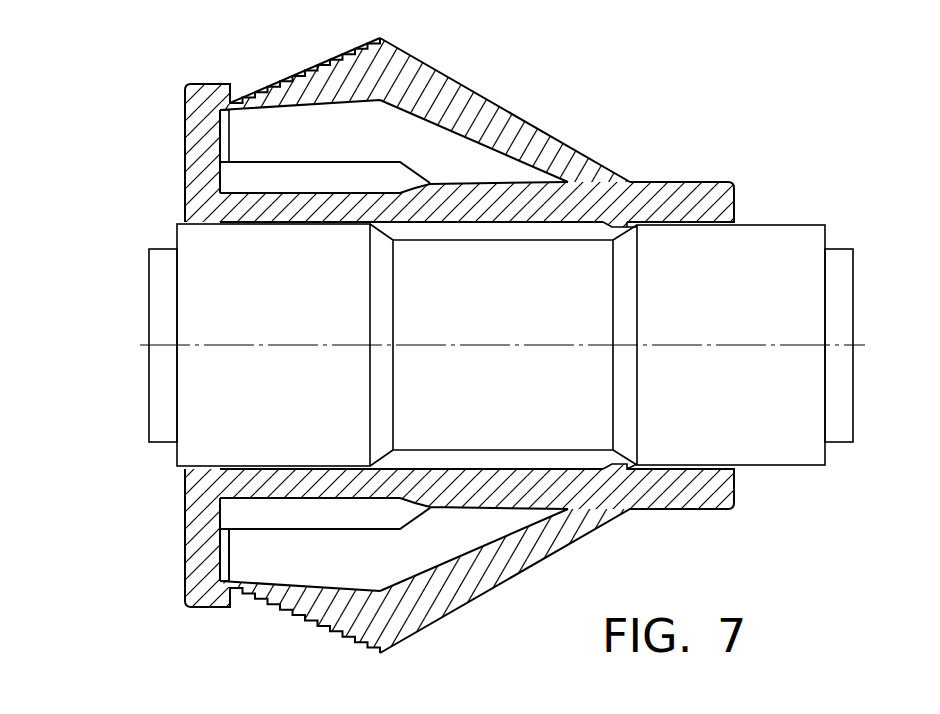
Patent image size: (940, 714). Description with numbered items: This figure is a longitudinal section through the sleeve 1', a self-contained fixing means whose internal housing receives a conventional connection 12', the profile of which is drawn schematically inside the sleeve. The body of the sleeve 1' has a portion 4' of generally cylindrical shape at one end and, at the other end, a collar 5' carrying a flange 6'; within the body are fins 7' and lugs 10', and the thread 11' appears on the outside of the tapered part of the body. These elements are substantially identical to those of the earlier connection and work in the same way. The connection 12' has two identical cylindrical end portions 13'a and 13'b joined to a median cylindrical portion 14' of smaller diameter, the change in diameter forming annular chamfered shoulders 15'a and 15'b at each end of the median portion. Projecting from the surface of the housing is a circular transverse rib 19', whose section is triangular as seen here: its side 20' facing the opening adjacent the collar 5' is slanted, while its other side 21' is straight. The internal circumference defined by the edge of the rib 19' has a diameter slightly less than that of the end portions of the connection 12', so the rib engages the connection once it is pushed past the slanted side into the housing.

The sleeve 1' is at (483, 148).
The portion with generally cylindrical shape 4' is at (492, 561).
The collar 5' is at (447, 535).
The flange 6' is at (254, 136).
The fins 7' is at (325, 148).
The lugs 10' is at (425, 110).
The thread 11' is at (305, 62).
The connection 12' is at (755, 310).
The cylindrical end portion 13'a is at (130, 345).
The cylindrical end portion 13'b is at (869, 345).
The median cylindrical portion 14' is at (503, 345).
The annular chamfered shoulder 15'a is at (324, 345).
The annular chamfered shoulder 15'b is at (595, 345).
The circular transverse rib 19' is at (600, 443).
The slanted side of rib 20' is at (595, 249).
The straight side of rib 21' is at (658, 243).